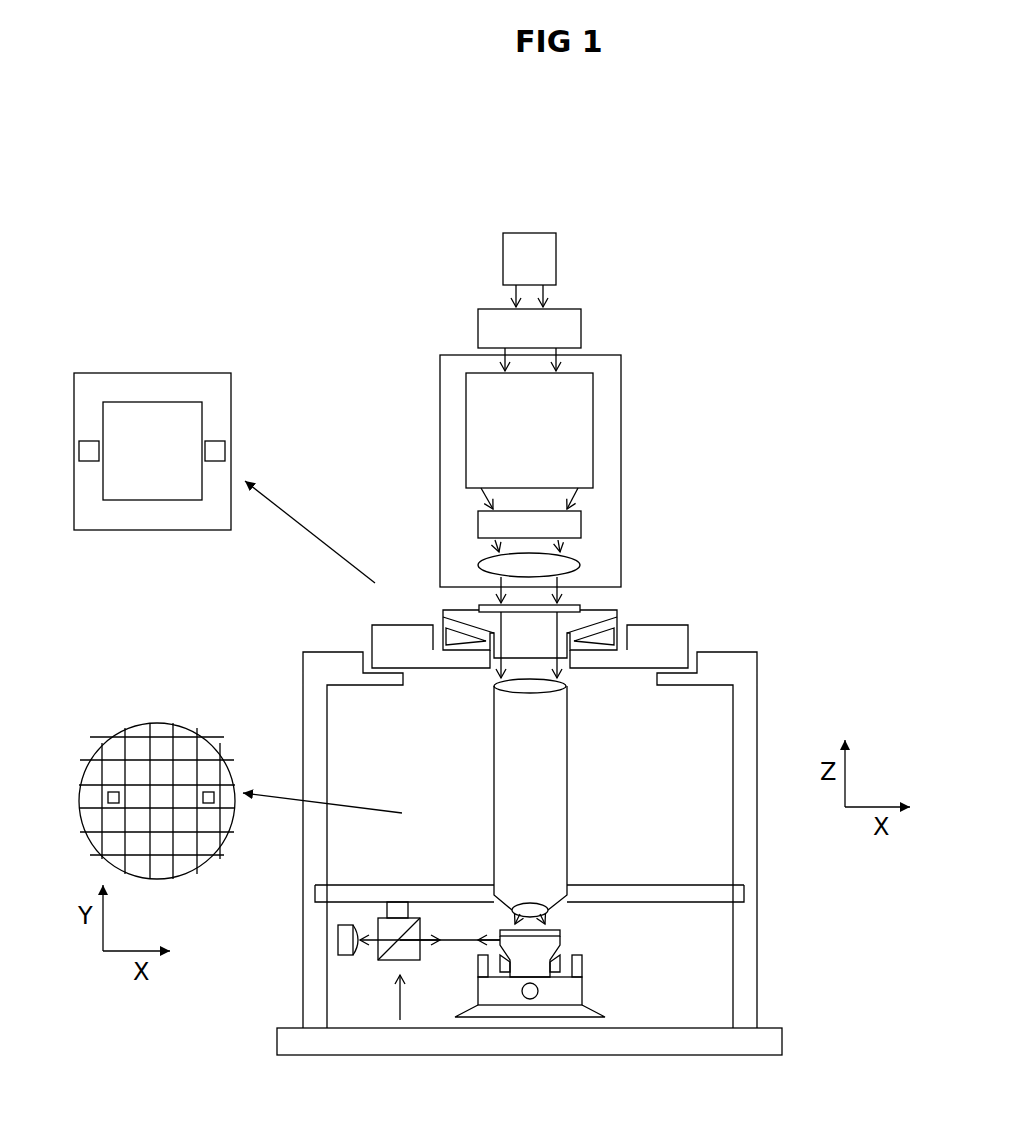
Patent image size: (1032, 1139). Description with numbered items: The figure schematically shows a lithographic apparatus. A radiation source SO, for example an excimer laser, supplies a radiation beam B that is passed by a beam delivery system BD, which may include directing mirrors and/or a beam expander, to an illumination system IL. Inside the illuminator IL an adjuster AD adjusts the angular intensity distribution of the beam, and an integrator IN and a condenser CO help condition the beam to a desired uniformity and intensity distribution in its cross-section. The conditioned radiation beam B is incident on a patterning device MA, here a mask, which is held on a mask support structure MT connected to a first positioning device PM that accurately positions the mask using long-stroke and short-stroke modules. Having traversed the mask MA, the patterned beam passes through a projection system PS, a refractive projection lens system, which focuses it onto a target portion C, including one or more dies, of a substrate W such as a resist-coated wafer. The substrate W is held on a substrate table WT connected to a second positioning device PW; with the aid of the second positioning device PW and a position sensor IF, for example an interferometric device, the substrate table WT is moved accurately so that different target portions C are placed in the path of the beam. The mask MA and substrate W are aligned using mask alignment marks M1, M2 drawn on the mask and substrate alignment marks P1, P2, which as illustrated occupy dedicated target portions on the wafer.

The radiation source SO is at (557, 263).
The beam delivery system BD is at (581, 337).
The illumination system IL is at (621, 390).
The adjuster AD is at (593, 440).
The integrator IN is at (581, 520).
The condenser CO is at (580, 565).
The radiation beam B is at (532, 598).
The patterning device MA is at (480, 608).
The mask support structure MT is at (627, 614).
The first positioning device PM is at (372, 625).
The projection system PS is at (567, 778).
The substrate W is at (515, 929).
The substrate table WT is at (562, 940).
The second positioning device PW is at (580, 995).
The position sensor IF is at (370, 965).
The mask alignment mark M1 is at (215, 440).
The mask alignment mark M2 is at (85, 440).
The substrate alignment mark P1 is at (112, 790).
The substrate alignment mark P2 is at (205, 790).
The target portion C is at (161, 785).